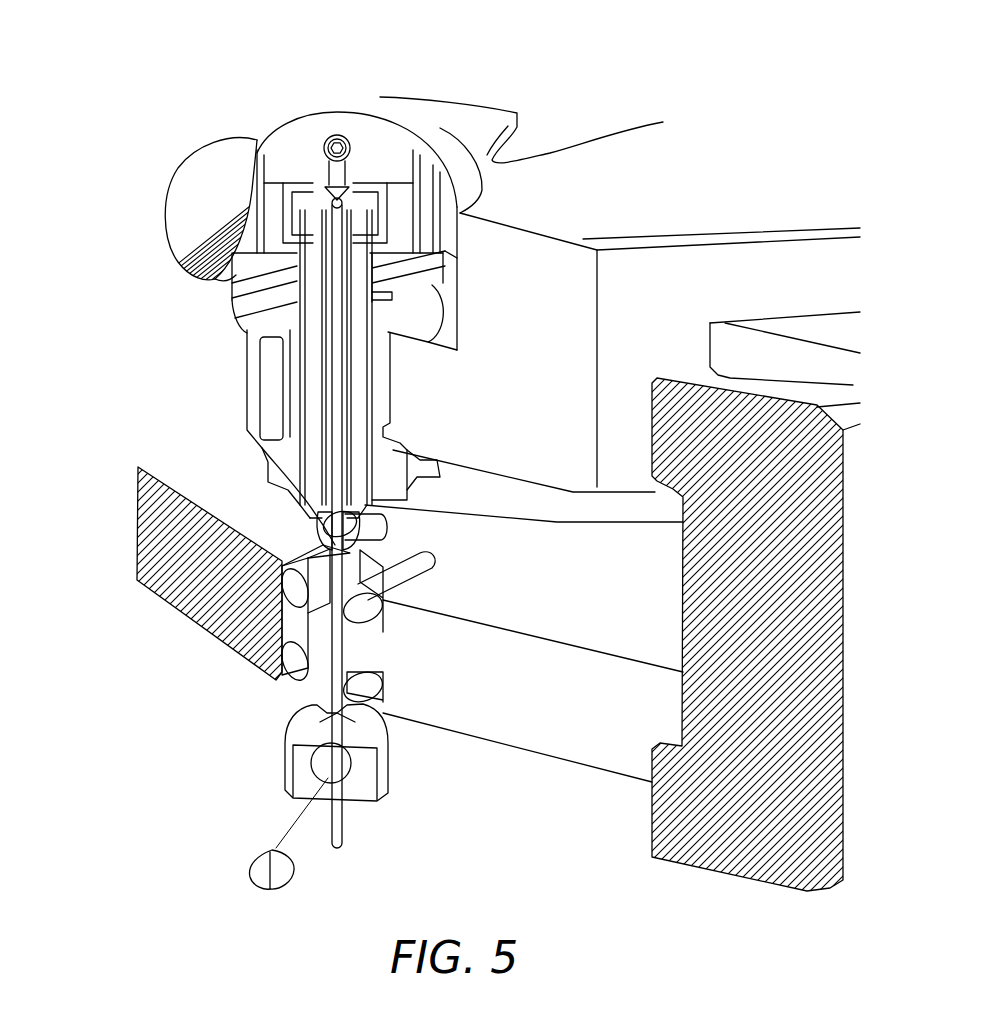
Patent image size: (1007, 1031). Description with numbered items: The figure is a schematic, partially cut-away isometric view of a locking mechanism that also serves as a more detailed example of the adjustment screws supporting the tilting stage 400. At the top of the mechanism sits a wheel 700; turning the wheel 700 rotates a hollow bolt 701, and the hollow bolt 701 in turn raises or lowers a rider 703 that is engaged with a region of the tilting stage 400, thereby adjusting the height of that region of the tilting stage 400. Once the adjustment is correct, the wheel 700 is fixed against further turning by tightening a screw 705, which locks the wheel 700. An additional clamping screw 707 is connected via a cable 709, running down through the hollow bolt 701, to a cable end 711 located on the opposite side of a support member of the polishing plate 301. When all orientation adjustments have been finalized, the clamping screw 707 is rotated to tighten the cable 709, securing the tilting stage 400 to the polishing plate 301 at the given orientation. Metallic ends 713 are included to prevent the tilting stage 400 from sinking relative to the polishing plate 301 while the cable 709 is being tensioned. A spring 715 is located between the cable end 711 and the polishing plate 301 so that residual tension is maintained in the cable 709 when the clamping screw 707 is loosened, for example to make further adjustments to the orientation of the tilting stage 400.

The wheel 700 is at (437, 187).
The clamping screw 707 is at (295, 138).
The screw 705 is at (167, 190).
The tilting stage 400 is at (550, 300).
The hollow bolt 701 is at (317, 315).
The rider 703 is at (293, 423).
The cable 709 is at (330, 565).
The spring 715 is at (318, 689).
The cable end 711 is at (287, 760).
The metallic ends 713 is at (383, 593).
The polishing plate 301 is at (607, 720).